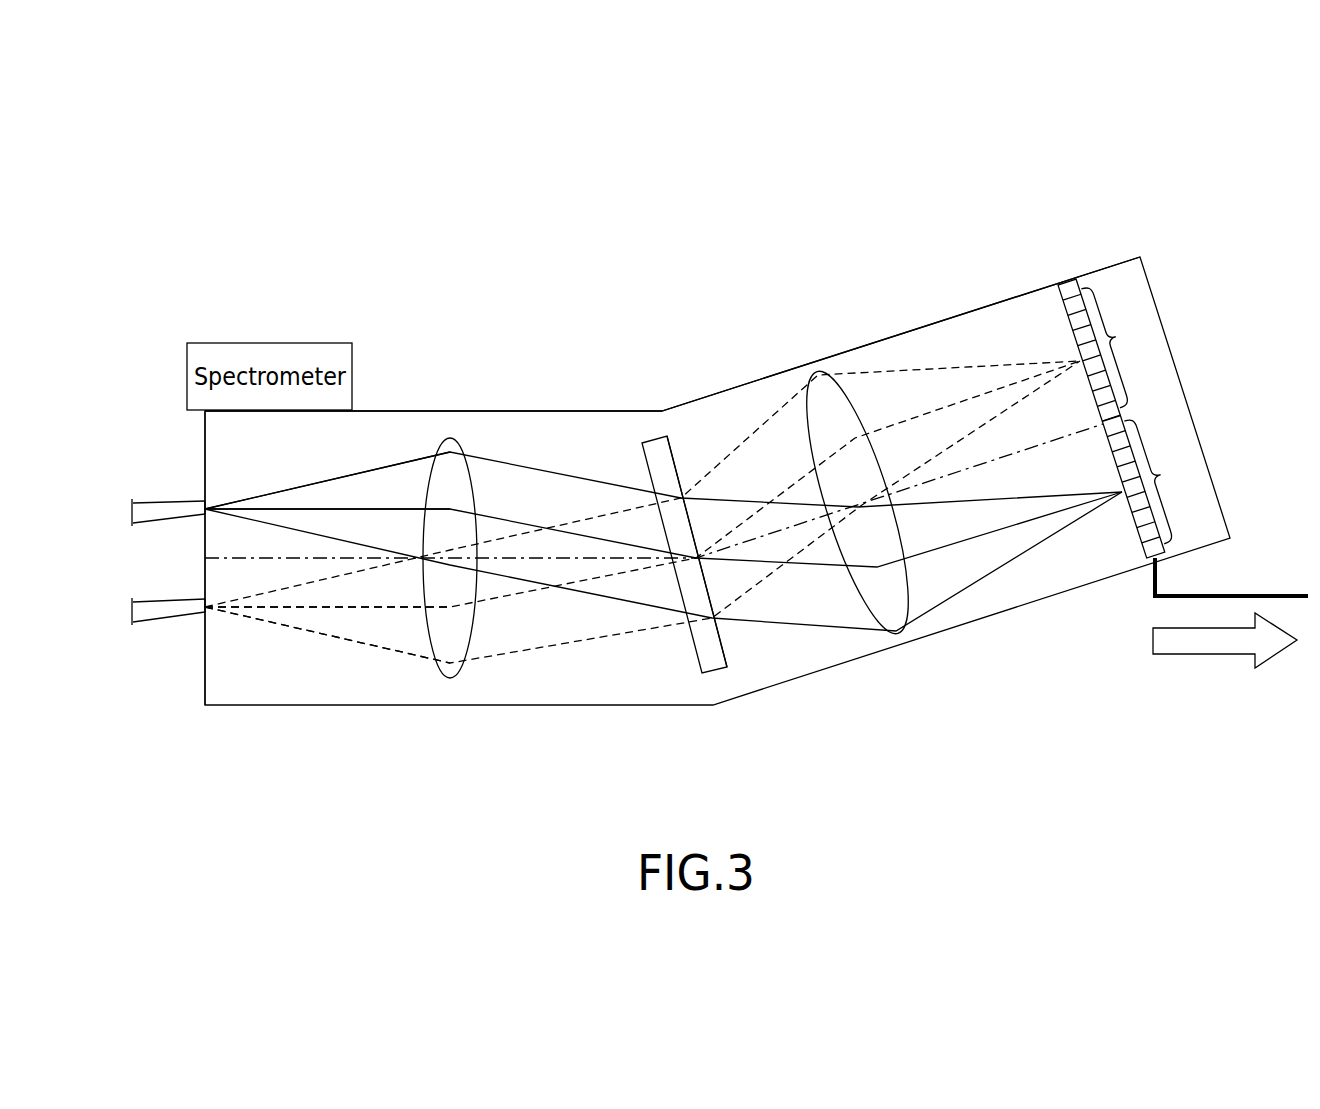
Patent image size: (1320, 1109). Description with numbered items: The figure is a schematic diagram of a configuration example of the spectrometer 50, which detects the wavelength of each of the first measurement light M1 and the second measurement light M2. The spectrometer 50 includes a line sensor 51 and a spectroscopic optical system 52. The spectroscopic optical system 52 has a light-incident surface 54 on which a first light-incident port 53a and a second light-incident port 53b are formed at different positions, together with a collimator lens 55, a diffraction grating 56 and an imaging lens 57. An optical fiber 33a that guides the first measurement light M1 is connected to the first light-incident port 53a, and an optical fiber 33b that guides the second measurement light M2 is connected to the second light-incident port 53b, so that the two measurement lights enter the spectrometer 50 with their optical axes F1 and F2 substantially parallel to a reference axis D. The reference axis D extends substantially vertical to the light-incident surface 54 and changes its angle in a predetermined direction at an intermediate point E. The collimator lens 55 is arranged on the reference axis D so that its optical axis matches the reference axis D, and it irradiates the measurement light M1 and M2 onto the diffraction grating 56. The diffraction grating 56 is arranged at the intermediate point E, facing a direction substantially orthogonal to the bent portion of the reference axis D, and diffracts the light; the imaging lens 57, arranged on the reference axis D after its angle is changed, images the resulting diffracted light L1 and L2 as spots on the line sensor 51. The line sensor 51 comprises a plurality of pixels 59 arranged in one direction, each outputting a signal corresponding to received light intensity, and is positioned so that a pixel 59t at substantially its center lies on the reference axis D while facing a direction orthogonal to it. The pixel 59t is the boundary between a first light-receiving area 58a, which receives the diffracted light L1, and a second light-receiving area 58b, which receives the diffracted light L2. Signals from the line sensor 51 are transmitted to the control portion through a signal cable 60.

The optical fiber 33a is at (136, 502).
The optical fiber 33b is at (160, 600).
The spectrometer 50 is at (719, 303).
The line sensor 51 is at (1067, 281).
The spectroscopic optical system 52 is at (587, 450).
The first light-incident port 53a is at (205, 500).
The second light-incident port 53b is at (217, 613).
The light-incident surface 54 is at (213, 668).
The collimator lens 55 is at (450, 438).
The diffraction grating 56 is at (650, 440).
The imaging lens 57 is at (817, 370).
The first light-receiving area 58a is at (1120, 345).
The second light-receiving area 58b is at (1162, 480).
The pixels 59 is at (1057, 290).
The pixel at substantially the center 59t is at (1128, 413).
The signal cable 60 is at (1255, 595).
The reference axis D is at (266, 558).
The intermediate point E is at (678, 560).
The optical axis F1 is at (378, 508).
The optical axis F2 is at (320, 605).
The diffracted light L1 is at (838, 627).
The diffracted light L2 is at (930, 367).
The measurement light M1 is at (412, 460).
The measurement light M2 is at (373, 646).